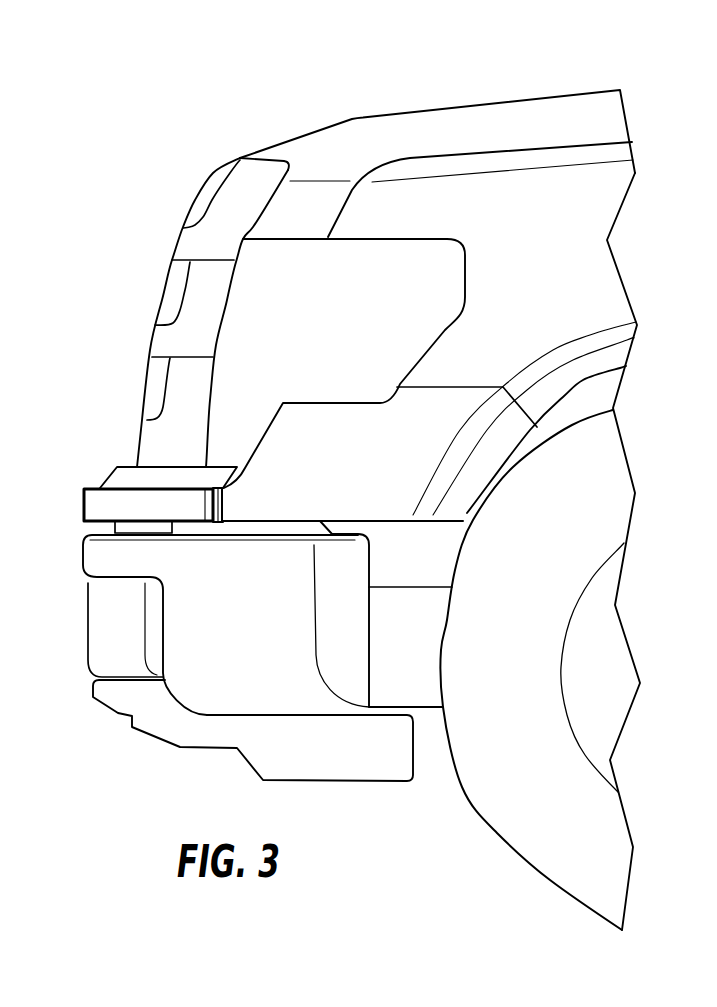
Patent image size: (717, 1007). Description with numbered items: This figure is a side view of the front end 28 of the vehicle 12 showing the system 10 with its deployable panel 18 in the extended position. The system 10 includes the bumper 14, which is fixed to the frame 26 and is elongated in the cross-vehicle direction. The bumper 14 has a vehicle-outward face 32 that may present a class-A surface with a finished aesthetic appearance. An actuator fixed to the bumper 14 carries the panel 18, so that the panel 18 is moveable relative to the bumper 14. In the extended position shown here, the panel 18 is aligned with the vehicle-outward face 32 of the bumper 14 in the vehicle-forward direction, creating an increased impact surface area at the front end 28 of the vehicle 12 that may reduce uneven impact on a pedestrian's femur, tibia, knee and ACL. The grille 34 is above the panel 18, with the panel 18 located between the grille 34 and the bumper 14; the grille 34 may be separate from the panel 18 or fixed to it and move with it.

The system 10 is at (53, 446).
The vehicle 12 is at (427, 107).
The bumper 14 is at (265, 650).
The panel 18 is at (100, 507).
The frame 26 is at (540, 224).
The front end 28 is at (202, 174).
The vehicle-outward face 32 is at (82, 502).
The grille 34 is at (192, 243).